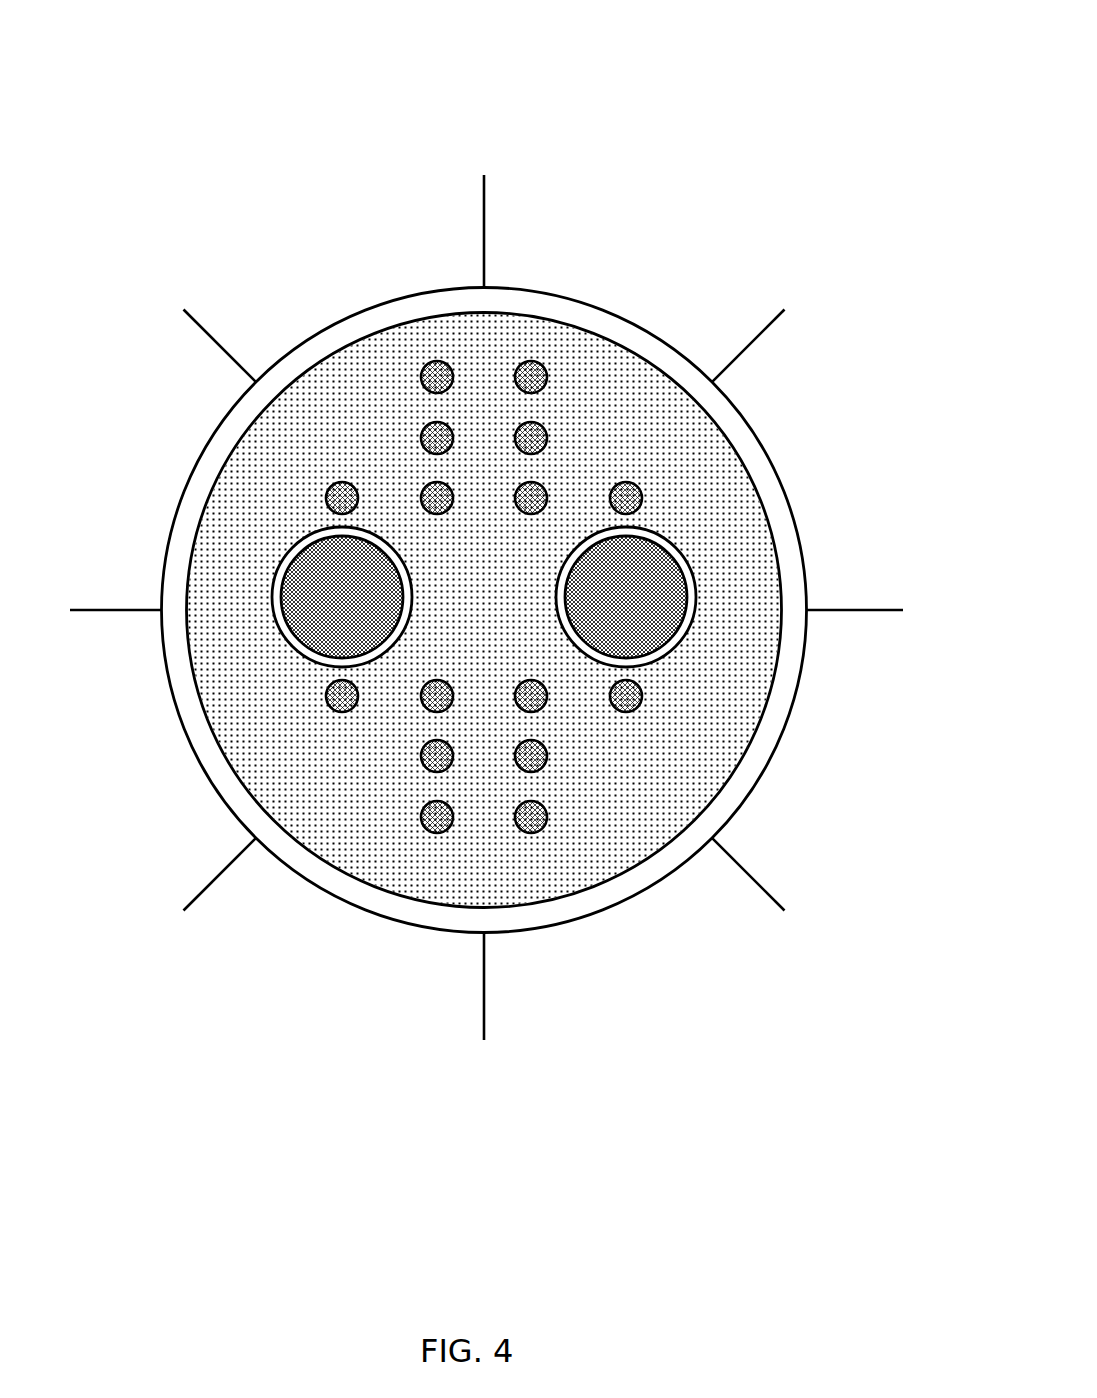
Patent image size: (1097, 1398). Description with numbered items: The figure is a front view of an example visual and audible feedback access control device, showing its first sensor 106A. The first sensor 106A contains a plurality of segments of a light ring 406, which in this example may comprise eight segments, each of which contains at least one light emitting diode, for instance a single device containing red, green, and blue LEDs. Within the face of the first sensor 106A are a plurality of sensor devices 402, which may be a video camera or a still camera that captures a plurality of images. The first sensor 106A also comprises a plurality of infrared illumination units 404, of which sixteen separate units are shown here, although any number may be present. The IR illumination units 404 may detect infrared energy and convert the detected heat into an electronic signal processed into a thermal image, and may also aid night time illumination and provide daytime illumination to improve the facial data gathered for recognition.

The first sensor 106A is at (155, 85).
The sensor devices 402 is at (298, 581).
The infrared illumination units 404 is at (430, 372).
The light ring 406 is at (746, 806).